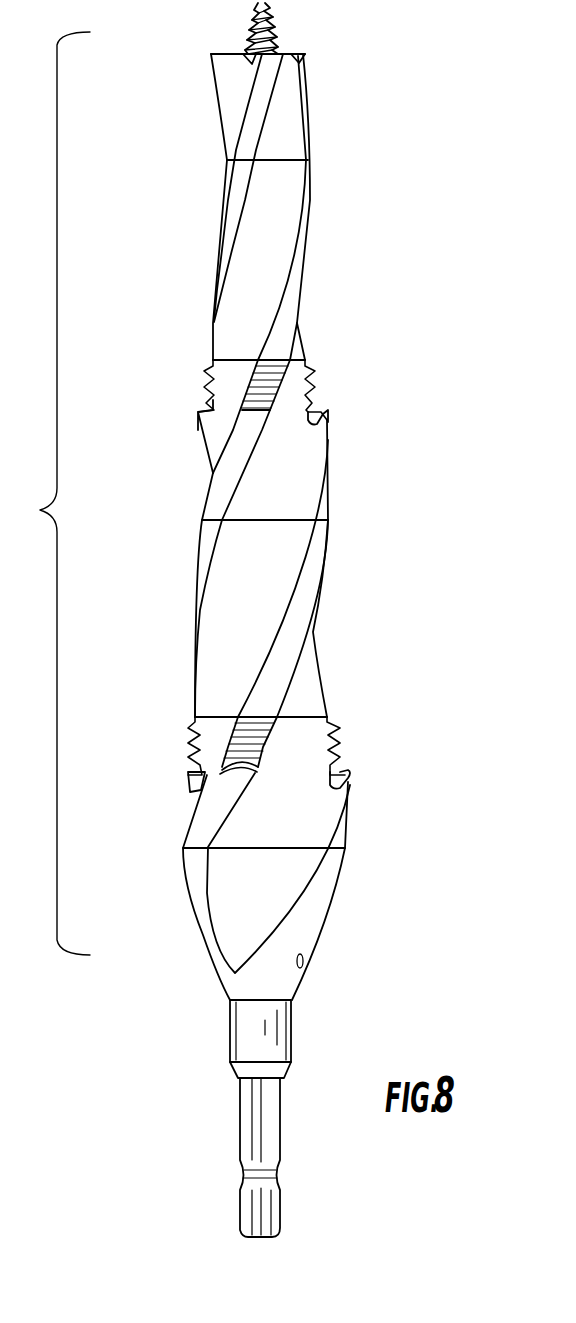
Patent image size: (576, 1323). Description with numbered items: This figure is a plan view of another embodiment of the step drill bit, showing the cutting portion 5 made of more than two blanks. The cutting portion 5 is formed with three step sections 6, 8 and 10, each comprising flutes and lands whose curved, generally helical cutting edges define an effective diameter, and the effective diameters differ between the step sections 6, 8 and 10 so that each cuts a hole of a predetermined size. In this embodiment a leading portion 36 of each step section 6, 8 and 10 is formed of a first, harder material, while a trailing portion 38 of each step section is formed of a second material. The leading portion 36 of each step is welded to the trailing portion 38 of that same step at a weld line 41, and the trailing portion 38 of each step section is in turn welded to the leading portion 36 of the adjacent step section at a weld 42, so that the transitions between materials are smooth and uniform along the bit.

The cutting portion 5 is at (56, 493).
The step section 6 is at (404, 252).
The step section 8 is at (361, 566).
The step section 10 is at (394, 832).
The leading portion 36 is at (308, 99).
The trailing portion 38 is at (312, 237).
The weld line 41 is at (277, 162).
The weld 42 is at (236, 356).